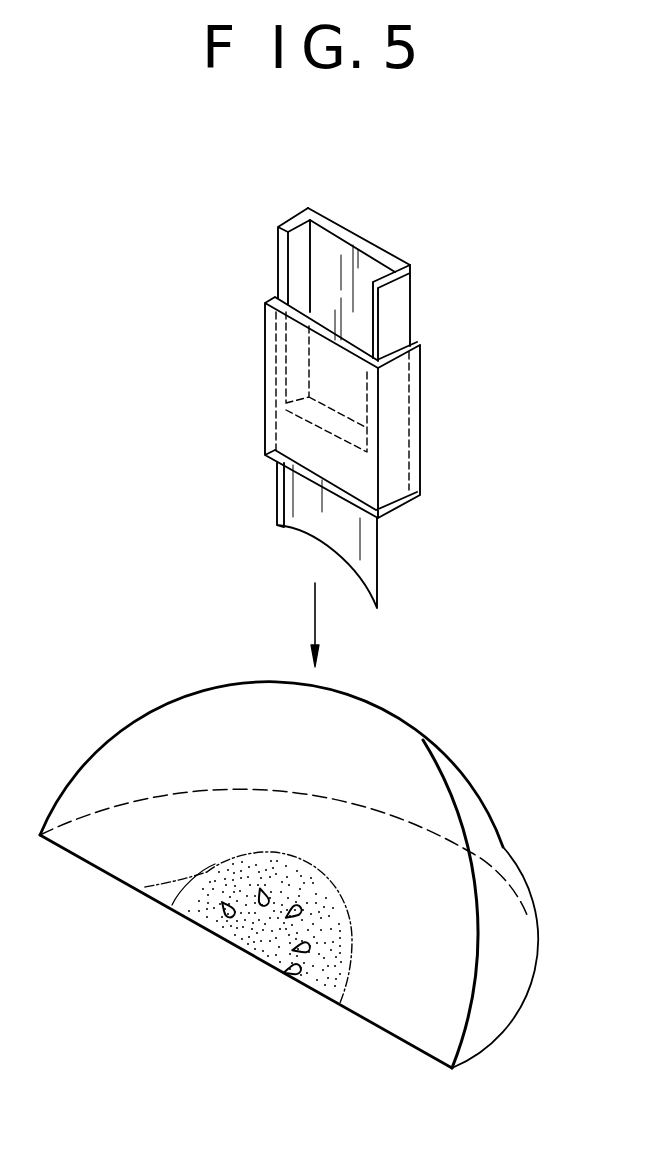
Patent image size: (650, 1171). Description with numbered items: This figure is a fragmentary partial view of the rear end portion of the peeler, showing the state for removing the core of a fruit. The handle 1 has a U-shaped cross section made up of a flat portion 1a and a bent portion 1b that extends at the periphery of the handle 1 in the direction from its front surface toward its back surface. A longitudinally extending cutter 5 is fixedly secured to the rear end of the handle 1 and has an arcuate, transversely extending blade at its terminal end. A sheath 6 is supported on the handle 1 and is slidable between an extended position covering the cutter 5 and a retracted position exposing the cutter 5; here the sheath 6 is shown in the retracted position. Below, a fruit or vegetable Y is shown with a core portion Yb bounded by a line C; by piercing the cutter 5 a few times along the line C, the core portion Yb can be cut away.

The handle 1 is at (344, 335).
The flat portion 1a is at (353, 243).
The bent portion 1b is at (278, 258).
The cutter 5 is at (307, 525).
The sheath 6 is at (421, 428).
The fruit or vegetable Y is at (488, 800).
The line C is at (145, 887).
The core portion Yb is at (250, 935).